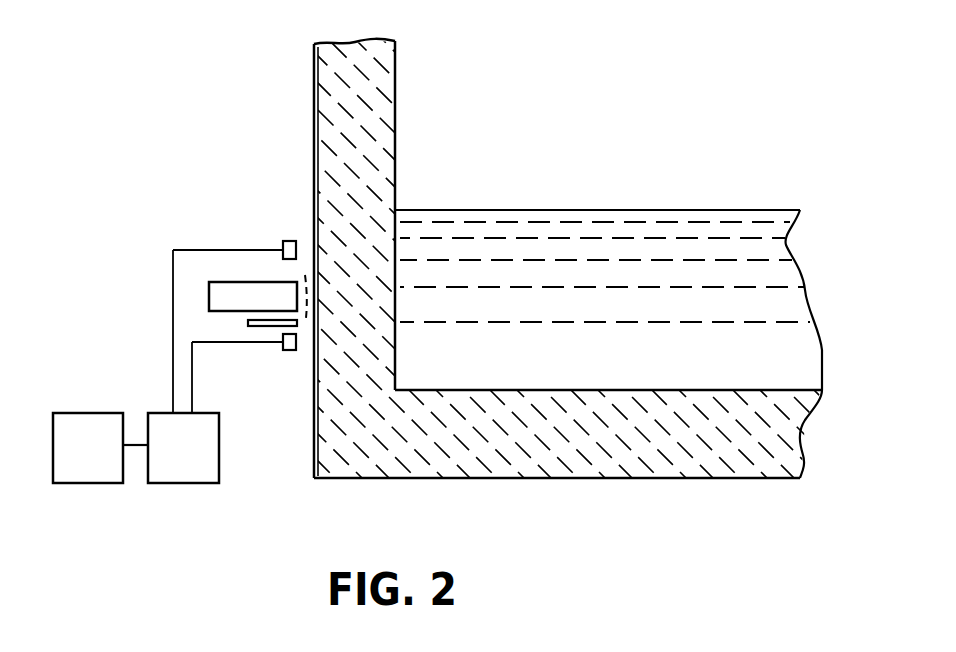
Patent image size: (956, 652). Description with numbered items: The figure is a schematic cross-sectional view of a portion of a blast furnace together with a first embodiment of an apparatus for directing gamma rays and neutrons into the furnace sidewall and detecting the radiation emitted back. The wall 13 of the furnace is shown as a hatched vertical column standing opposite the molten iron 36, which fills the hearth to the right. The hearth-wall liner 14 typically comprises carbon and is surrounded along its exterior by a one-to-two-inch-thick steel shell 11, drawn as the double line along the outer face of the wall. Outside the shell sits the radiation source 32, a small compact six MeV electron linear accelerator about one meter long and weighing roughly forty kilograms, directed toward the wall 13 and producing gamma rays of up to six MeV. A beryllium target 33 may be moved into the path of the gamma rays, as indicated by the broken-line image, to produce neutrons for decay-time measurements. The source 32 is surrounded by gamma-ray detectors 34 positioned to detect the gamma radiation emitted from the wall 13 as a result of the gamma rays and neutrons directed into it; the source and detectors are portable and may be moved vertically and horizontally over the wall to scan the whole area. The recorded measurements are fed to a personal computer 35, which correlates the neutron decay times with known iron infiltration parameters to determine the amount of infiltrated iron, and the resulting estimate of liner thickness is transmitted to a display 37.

The steel shell 11 is at (314, 160).
The wall 13 is at (296, 43).
The hearth-wall liner 14 is at (330, 115).
The radiation source 32 is at (218, 292).
The beryllium target 33 is at (306, 318).
The gamma-ray detectors 34 is at (285, 243).
The personal computer 35 is at (183, 468).
The molten iron 36 is at (545, 232).
The display 37 is at (87, 470).